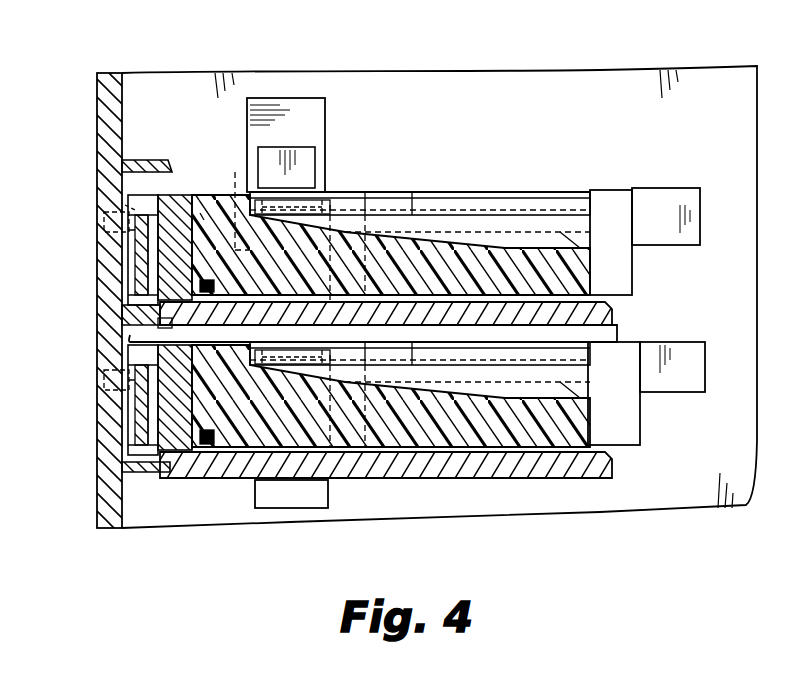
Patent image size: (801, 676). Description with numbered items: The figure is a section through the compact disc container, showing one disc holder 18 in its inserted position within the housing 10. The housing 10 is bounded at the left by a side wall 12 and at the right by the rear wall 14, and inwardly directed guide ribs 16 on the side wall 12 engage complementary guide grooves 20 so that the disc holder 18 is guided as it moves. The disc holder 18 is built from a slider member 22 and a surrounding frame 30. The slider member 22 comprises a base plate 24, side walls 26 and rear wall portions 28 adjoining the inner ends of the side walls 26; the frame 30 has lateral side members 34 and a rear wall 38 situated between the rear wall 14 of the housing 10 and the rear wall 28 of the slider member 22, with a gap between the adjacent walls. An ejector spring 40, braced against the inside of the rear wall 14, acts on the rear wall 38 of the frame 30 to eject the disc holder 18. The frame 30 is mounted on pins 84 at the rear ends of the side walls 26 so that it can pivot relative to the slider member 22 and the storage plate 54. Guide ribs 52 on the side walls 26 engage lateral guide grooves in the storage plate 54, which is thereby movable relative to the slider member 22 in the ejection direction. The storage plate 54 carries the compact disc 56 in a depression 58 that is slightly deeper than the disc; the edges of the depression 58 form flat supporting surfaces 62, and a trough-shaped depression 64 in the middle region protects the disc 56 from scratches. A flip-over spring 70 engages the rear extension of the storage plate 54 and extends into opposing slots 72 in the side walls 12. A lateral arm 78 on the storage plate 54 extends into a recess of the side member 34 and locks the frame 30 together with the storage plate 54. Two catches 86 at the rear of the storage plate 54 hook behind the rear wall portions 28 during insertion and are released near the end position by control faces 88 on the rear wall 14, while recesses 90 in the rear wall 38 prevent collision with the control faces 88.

The housing 10 is at (88, 114).
The side wall 12 is at (110, 291).
The rear wall 14 is at (580, 100).
The guide rib 16 is at (158, 160).
The disc holder 18 is at (558, 185).
The guide groove 20 is at (150, 342).
The slider member 22 is at (612, 305).
The base plate 24 is at (597, 326).
The side wall 26 is at (160, 200).
The rear wall portion 28 is at (368, 260).
The frame 30 is at (132, 252).
The lateral side member 34 is at (133, 280).
The rear wall 38 is at (612, 198).
The ejector spring 40 is at (680, 196).
The guide rib 52 is at (212, 290).
The storage plate 54 is at (590, 270).
The compact disc 56 is at (458, 205).
The depression 58 is at (605, 235).
The supporting surface 62 is at (285, 212).
The trough-shaped depression 64 is at (504, 245).
The flip-over spring 70 is at (135, 220).
The slot 72 is at (125, 208).
The lateral arm 78 is at (200, 215).
The pin 84 is at (158, 322).
The catch 86 is at (300, 150).
The control face 88 is at (297, 110).
The recess 90 is at (228, 200).